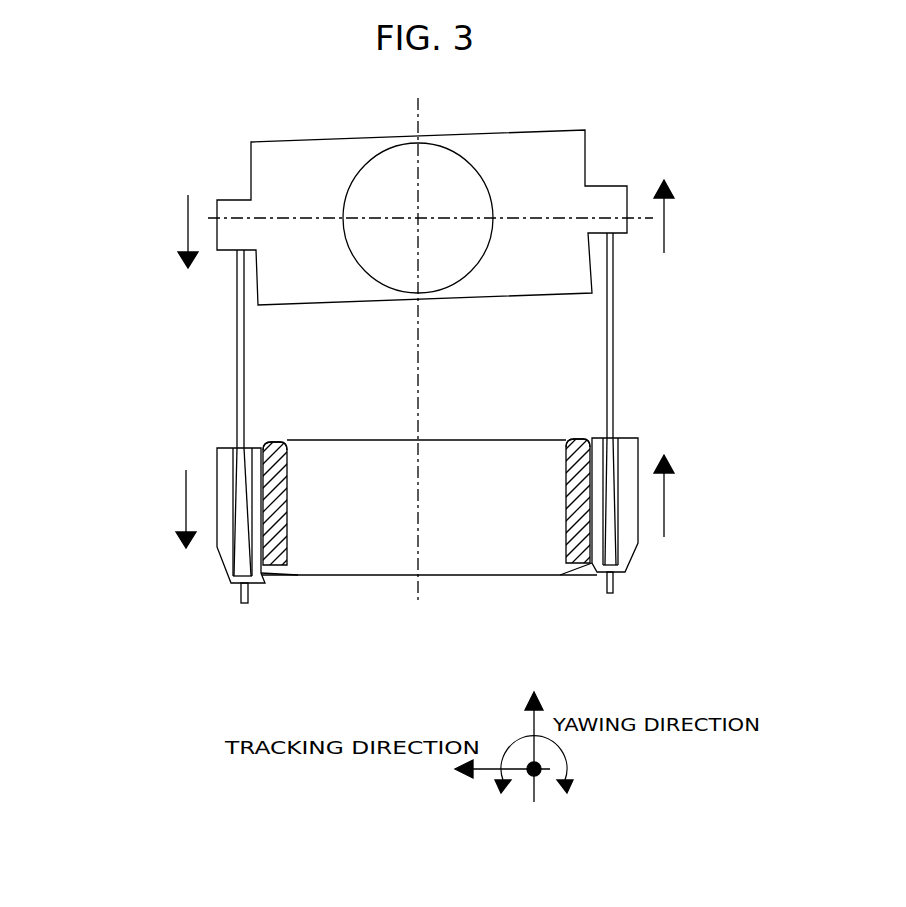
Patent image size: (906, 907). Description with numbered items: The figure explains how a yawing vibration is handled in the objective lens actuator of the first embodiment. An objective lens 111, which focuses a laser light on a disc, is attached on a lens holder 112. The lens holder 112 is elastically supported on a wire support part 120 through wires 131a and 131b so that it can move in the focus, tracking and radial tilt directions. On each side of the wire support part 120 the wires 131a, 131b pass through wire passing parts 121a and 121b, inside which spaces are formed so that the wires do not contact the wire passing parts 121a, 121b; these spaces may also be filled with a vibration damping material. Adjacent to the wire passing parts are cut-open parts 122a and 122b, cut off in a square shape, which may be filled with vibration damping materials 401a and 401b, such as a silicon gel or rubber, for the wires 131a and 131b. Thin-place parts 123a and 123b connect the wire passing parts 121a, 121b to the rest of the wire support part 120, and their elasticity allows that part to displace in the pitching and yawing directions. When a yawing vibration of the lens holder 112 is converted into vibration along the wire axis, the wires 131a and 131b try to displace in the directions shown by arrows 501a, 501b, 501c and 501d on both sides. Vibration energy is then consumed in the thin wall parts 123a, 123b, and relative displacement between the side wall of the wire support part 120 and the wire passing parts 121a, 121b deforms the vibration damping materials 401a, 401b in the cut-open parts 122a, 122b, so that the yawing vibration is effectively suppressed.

The objective lens 111 is at (445, 155).
The lens holder 112 is at (578, 163).
The wire support part 120 is at (423, 457).
The wire passing part 121a is at (227, 457).
The wire passing part 121b is at (628, 445).
The cut-open part 122a is at (288, 532).
The cut-open part 122b is at (565, 535).
The thin-place part 123a is at (273, 573).
The thin-place part 123b is at (580, 567).
The wire 131a is at (237, 370).
The wire 131b is at (613, 365).
The vibration damping material 401a is at (272, 445).
The vibration damping material 401b is at (575, 445).
The arrow 501a is at (159, 231).
The arrow 501b is at (158, 509).
The arrow 501c is at (694, 216).
The arrow 501d is at (695, 496).